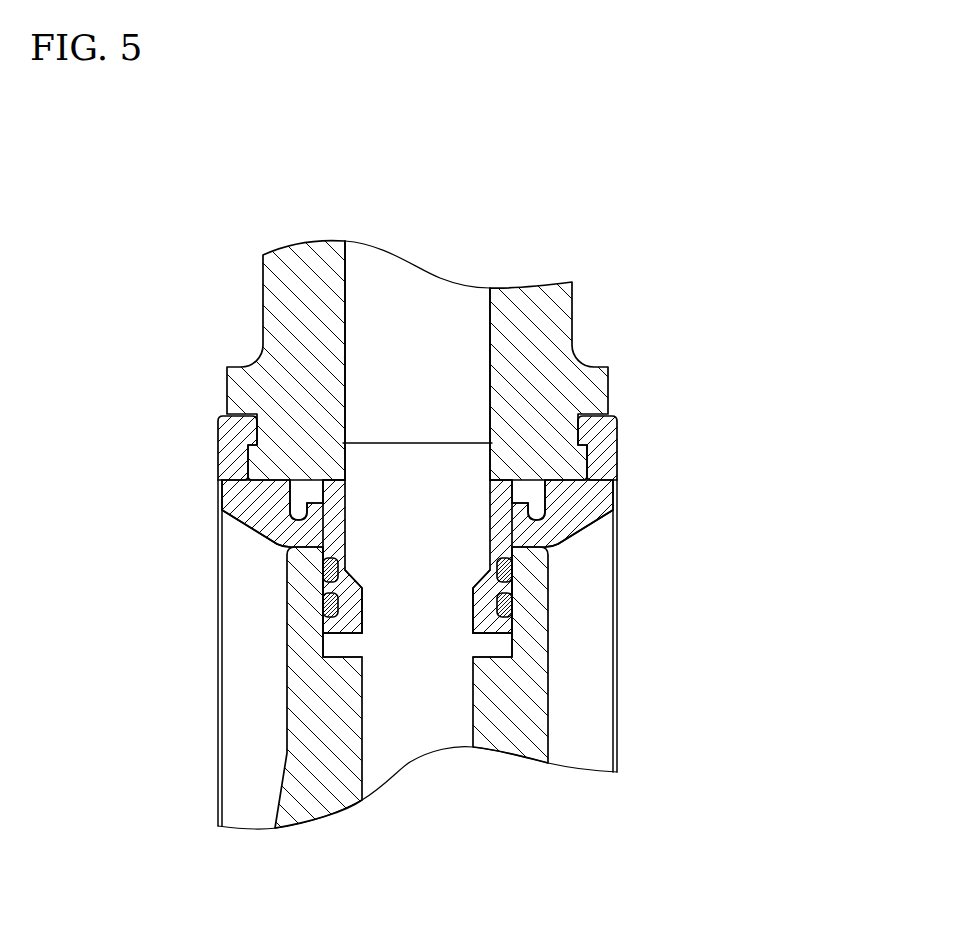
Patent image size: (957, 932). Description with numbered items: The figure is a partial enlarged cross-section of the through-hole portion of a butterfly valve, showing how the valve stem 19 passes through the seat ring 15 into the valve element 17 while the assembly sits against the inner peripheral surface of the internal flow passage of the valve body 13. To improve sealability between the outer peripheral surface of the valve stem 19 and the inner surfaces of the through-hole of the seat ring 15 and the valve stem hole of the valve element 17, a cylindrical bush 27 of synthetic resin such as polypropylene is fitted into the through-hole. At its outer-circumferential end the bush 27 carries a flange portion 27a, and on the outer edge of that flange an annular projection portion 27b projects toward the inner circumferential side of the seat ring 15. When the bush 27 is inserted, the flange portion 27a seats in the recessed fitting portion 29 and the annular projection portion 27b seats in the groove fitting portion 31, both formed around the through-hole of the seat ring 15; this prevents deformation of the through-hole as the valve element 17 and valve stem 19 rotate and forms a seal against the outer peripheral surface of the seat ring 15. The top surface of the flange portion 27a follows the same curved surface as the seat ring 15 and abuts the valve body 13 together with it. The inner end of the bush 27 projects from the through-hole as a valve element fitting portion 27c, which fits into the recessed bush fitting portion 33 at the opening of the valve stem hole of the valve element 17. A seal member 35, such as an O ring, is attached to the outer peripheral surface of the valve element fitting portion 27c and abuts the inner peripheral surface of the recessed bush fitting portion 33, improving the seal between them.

The valve body 13 is at (247, 388).
The seat ring 15 is at (592, 483).
The valve element 17 is at (522, 670).
The valve stem 19 is at (432, 308).
The bush 27 is at (515, 568).
The flange portion 27a is at (490, 484).
The annular projection portion 27b is at (515, 545).
The valve element fitting portion 27c is at (515, 591).
The recessed fitting portion 29 is at (300, 487).
The groove fitting portion 31 is at (285, 507).
The recessed bush fitting portion 33 is at (323, 638).
The seal member 35 is at (323, 566).